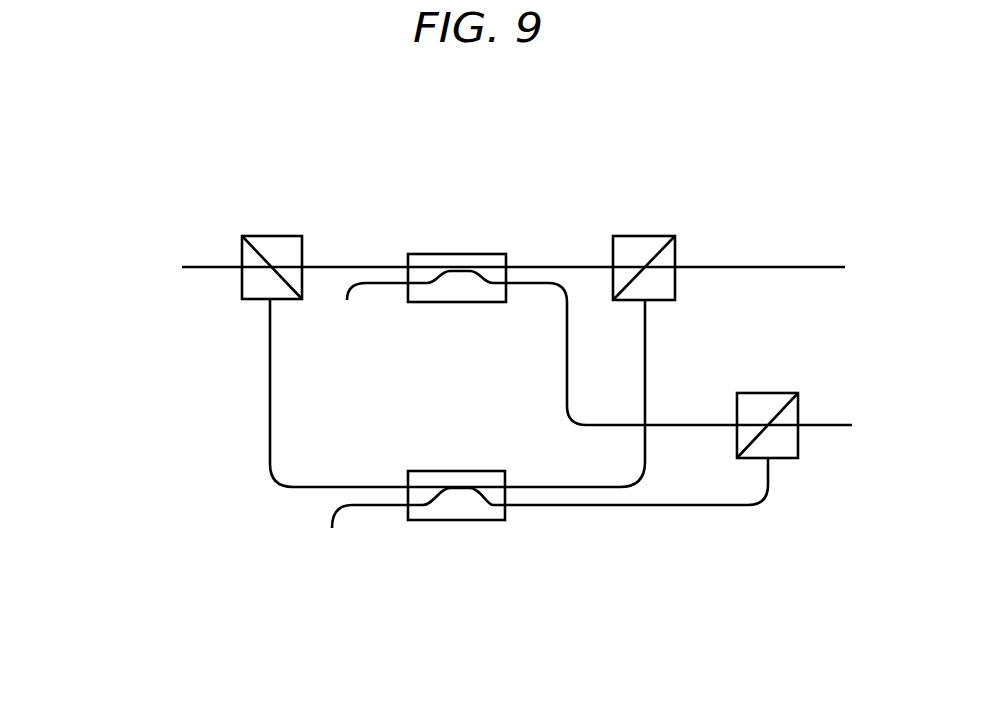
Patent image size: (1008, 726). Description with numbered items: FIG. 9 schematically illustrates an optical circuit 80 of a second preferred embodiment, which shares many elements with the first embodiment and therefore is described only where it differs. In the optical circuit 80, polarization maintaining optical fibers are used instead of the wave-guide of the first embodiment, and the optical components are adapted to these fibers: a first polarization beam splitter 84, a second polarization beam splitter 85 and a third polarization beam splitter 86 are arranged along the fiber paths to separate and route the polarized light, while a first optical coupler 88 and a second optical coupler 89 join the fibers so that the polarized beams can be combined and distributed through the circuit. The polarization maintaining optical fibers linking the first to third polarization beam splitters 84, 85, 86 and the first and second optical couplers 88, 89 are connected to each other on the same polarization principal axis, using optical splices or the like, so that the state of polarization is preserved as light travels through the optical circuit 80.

The optical circuit 80 is at (232, 488).
The first polarization beam splitter 84 is at (280, 236).
The second polarization beam splitter 85 is at (660, 236).
The third polarization beam splitter 86 is at (788, 460).
The first optical coupler 88 is at (470, 254).
The second optical coupler 89 is at (473, 520).